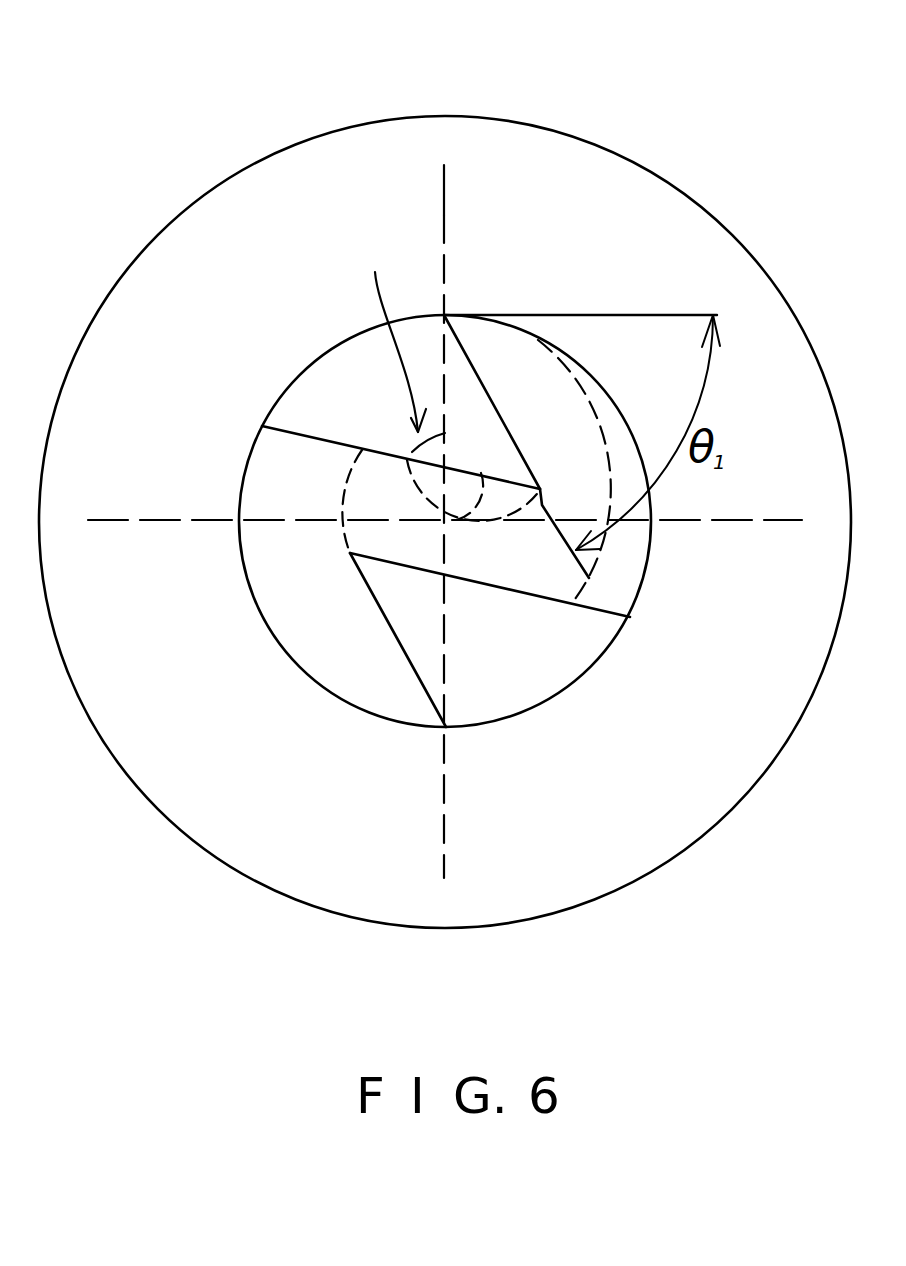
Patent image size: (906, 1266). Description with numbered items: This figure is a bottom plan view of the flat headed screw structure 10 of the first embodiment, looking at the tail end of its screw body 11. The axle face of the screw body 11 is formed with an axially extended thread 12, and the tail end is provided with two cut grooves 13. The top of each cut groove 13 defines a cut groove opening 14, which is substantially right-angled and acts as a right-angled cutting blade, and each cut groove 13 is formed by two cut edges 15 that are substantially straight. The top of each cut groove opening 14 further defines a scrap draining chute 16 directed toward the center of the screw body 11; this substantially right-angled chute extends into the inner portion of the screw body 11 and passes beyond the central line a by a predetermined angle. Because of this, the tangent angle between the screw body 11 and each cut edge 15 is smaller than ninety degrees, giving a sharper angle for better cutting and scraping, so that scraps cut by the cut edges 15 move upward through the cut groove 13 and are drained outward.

The flat headed screw structure 10 is at (722, 228).
The screw body 11 is at (502, 315).
The thread 12 is at (603, 458).
The cut groove 13 is at (352, 388).
The cut groove opening 14 is at (394, 331).
The cut edge 15 is at (468, 353).
The scrap draining chute 16 is at (498, 455).
The central line a is at (443, 202).